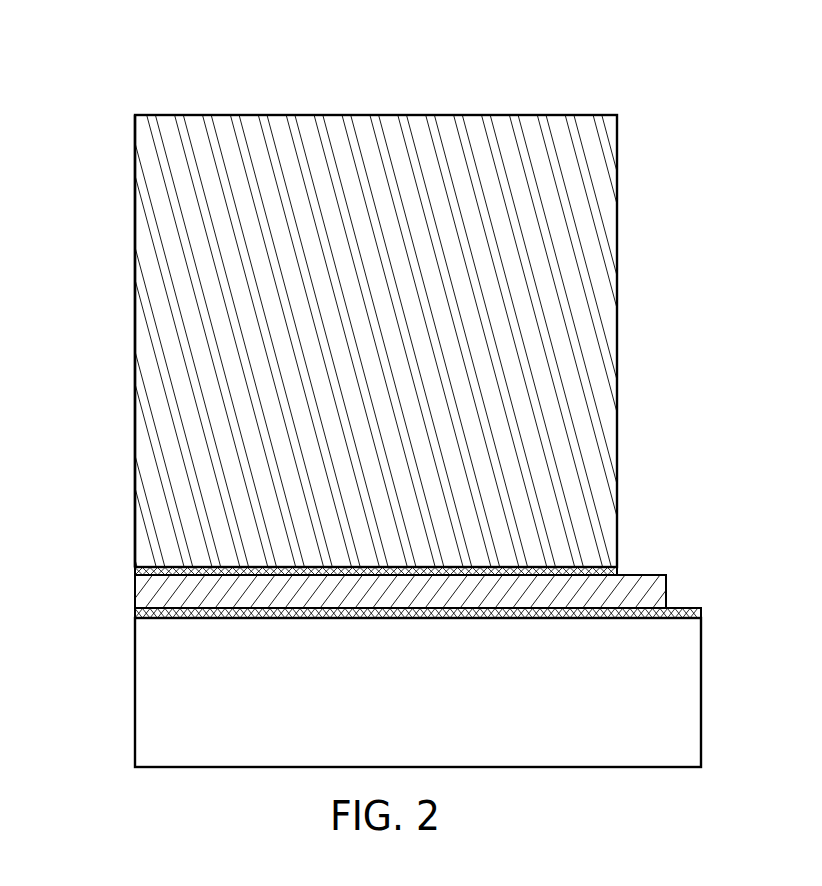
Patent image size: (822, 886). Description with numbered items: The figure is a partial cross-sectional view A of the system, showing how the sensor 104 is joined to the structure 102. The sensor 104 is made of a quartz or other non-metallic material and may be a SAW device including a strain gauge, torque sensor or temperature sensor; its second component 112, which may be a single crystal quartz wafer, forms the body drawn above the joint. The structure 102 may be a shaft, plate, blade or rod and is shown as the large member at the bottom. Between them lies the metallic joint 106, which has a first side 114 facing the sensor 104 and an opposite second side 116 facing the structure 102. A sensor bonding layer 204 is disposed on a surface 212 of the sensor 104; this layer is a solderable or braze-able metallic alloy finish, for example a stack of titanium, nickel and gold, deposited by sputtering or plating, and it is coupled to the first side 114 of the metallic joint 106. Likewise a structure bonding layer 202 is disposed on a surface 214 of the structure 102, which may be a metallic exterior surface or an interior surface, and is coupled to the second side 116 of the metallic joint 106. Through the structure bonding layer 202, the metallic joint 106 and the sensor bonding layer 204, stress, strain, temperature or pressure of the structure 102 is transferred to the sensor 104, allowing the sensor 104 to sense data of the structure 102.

The partial cross-sectional view A is at (538, 65).
The structure 102 is at (683, 702).
The sensor 104 is at (378, 115).
The metallic joint 106 is at (676, 566).
The second component 112 is at (135, 228).
The first side 114 is at (652, 562).
The second side 116 is at (674, 630).
The structure bonding layer 202 is at (125, 611).
The sensor bonding layer 204 is at (125, 571).
The surface 212 is at (602, 554).
The surface 214 is at (698, 605).